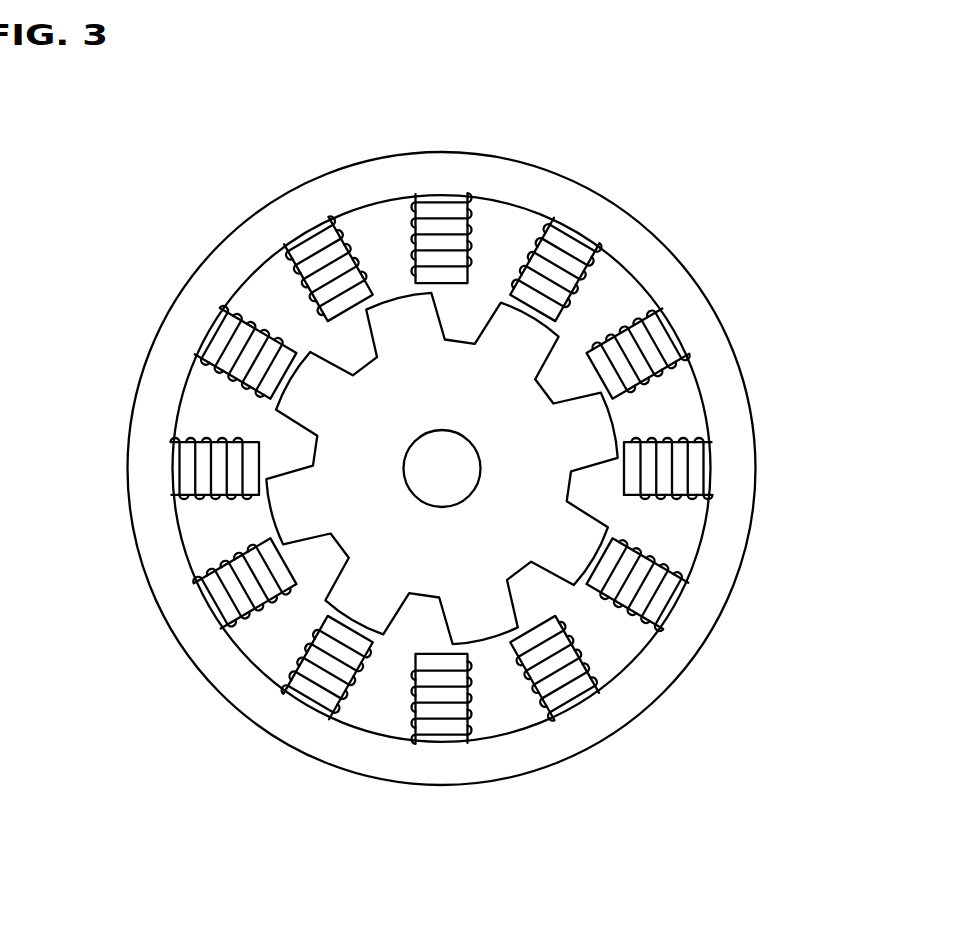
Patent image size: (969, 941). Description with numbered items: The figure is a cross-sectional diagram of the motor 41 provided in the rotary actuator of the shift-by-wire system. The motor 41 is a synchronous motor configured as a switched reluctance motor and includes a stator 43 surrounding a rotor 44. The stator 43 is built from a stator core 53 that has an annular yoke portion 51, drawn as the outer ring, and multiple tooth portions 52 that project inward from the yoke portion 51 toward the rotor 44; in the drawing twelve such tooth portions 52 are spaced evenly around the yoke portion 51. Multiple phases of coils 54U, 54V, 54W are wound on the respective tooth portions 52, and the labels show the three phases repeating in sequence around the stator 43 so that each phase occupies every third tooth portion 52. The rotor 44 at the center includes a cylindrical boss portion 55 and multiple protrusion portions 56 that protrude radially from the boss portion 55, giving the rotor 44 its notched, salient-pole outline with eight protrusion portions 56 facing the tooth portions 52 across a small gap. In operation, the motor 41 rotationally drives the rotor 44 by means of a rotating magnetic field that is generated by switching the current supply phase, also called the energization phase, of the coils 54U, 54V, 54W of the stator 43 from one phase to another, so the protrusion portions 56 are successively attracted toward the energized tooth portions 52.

The motor 41 is at (86, 335).
The stator 43 is at (207, 290).
The rotor 44 is at (368, 422).
The yoke portion 51 is at (633, 232).
The tooth portions 52 is at (562, 260).
The stator core 53 is at (300, 184).
The U-phase coil 54U is at (405, 235).
The V-phase coil 54V is at (530, 256).
The W-phase coil 54W is at (262, 265).
The boss portion 55 is at (503, 510).
The protrusion portions 56 is at (558, 562).